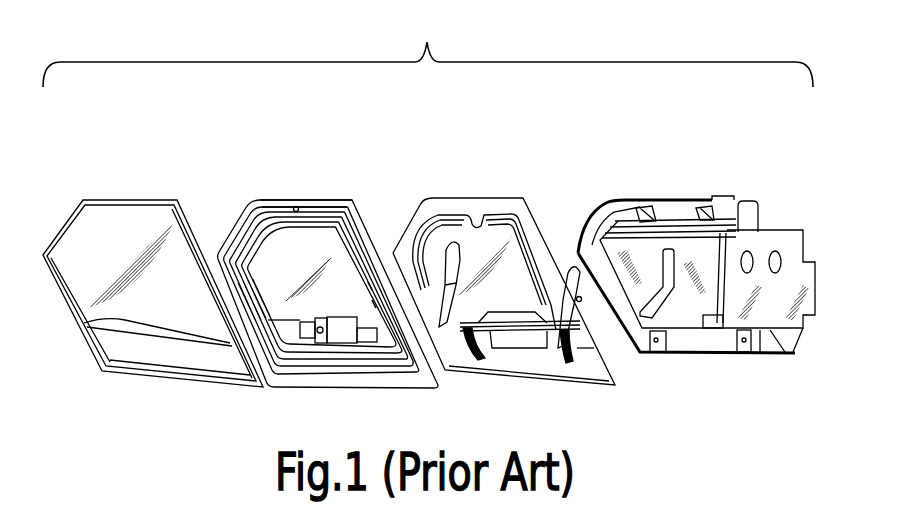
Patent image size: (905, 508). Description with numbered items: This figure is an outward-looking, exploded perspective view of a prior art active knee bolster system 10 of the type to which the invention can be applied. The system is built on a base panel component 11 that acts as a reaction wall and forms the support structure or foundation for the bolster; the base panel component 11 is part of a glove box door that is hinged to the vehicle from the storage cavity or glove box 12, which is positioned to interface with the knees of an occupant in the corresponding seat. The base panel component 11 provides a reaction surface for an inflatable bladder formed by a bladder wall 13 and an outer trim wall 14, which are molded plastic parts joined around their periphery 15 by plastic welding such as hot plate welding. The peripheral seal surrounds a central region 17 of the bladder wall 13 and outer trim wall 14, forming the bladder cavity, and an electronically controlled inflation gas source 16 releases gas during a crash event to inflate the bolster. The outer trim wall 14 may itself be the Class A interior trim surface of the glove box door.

The active knee bolster system 10 is at (428, 49).
The base panel component 11 is at (457, 196).
The glove box 12 is at (650, 197).
The bladder wall 13 is at (270, 198).
The outer trim wall 14 is at (136, 195).
The periphery 15 is at (328, 202).
The inflation gas source 16 is at (338, 337).
The central region 17 is at (323, 255).